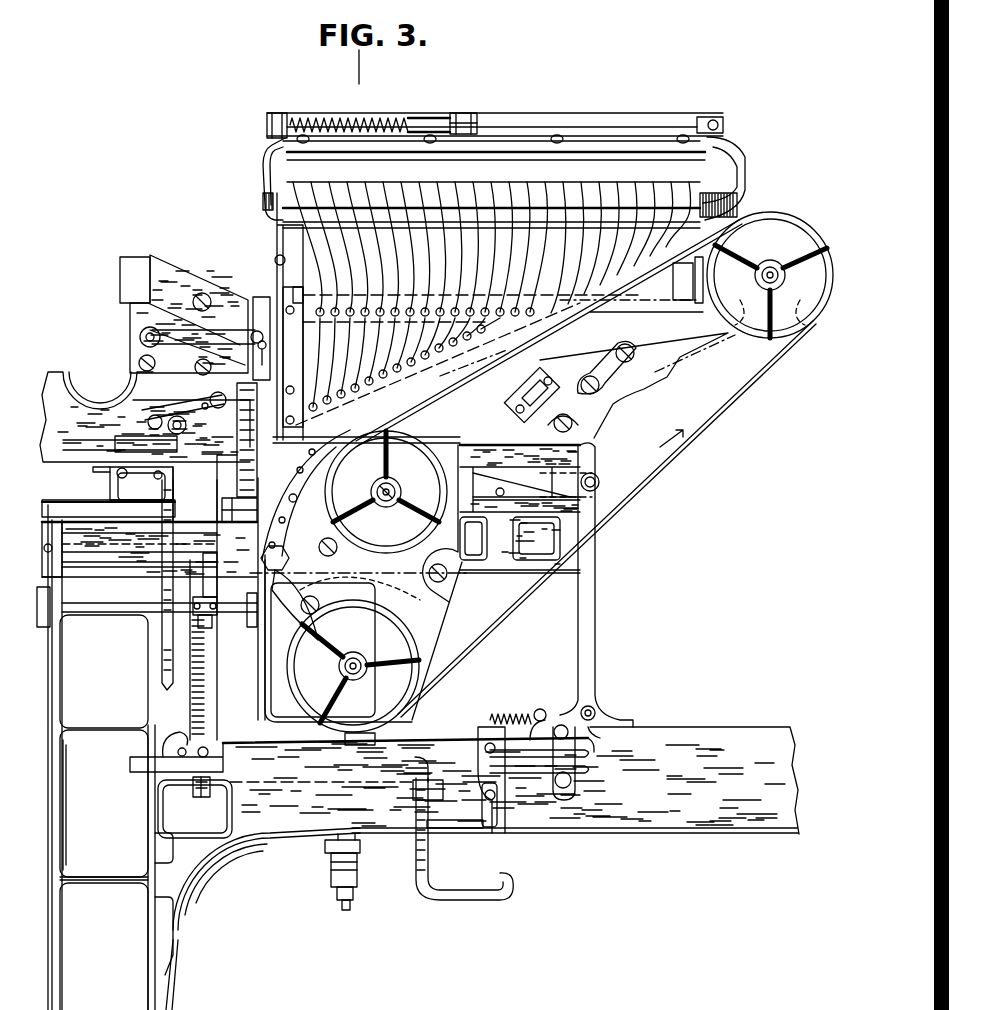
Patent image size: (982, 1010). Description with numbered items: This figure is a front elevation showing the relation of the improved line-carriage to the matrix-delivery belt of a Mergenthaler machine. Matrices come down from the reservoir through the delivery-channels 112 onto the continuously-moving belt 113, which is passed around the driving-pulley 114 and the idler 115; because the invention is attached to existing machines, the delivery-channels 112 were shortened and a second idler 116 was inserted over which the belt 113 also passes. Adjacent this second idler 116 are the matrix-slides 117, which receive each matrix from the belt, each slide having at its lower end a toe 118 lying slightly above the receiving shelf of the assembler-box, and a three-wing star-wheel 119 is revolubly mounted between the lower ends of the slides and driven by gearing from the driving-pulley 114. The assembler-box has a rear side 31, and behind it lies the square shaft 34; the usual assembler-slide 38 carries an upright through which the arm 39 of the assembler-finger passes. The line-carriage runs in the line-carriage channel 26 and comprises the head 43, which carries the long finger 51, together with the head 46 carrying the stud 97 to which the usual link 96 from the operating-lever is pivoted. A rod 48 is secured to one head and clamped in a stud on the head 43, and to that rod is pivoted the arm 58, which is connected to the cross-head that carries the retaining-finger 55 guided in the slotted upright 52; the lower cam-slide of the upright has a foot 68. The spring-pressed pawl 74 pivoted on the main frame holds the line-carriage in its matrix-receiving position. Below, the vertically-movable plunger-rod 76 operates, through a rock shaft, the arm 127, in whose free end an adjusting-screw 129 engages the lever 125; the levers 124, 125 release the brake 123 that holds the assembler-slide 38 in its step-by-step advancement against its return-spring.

The delivery-channels 112 is at (322, 240).
The upright 52 is at (258, 330).
The spring-pressed pawl 74 is at (153, 403).
The arm 58 is at (176, 414).
The rod 48 is at (87, 440).
The head 43 is at (108, 474).
The retaining-finger 55 is at (253, 457).
The foot 68 is at (237, 512).
The arm of the assembler-finger 39 is at (215, 533).
The rear side of the assembler-box 31 is at (97, 527).
The long finger 51 is at (162, 584).
The square shaft 34 is at (99, 612).
The three-wing star-wheel 119 is at (263, 547).
The toe 118 is at (250, 587).
The assembler-slide 38 is at (405, 744).
The matrix-slides 117 is at (314, 480).
The second idler 116 is at (416, 567).
The line-carriage guide or channel 26 is at (523, 502).
The driving-pulley 114 is at (415, 657).
The head 46 is at (585, 471).
The stud 97 is at (600, 487).
The link 96 is at (540, 491).
The belt 113 is at (674, 445).
The idler 115 is at (787, 327).
The plunger-rod 76 is at (353, 746).
The arm 127 is at (190, 812).
The lever 125 is at (430, 888).
The adjusting-screw 129 is at (199, 798).
The lever 124 is at (457, 829).
The brake 123 is at (498, 790).